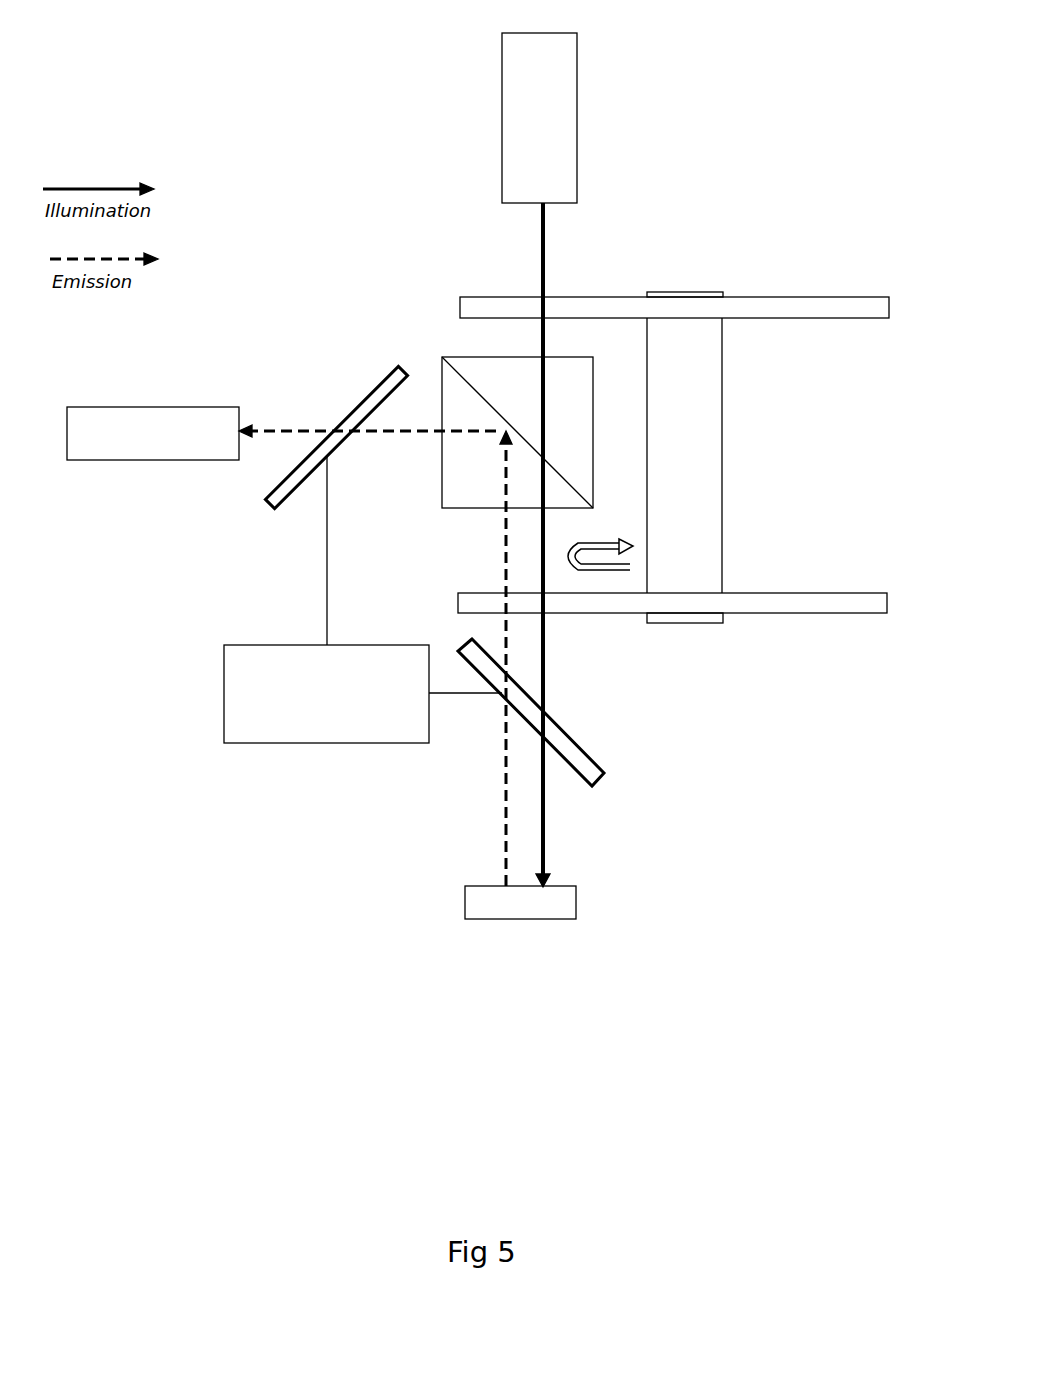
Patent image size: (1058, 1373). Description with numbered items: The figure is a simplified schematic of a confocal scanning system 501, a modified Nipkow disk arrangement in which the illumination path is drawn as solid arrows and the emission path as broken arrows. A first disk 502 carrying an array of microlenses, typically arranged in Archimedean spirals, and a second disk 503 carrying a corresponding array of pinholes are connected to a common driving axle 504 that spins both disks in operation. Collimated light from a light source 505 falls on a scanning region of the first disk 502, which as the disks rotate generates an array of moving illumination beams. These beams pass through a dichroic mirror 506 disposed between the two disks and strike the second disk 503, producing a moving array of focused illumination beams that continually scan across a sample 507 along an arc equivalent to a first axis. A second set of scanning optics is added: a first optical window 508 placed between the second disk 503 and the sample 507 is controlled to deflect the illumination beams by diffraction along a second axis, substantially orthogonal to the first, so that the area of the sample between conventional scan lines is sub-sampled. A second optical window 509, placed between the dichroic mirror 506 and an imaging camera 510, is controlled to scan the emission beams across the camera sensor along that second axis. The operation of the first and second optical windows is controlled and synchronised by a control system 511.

The confocal scanning system 501 is at (275, 60).
The first disk 502 is at (709, 262).
The second disk 503 is at (704, 640).
The common driving axle 504 is at (744, 455).
The light source 505 is at (612, 118).
The dichroic mirror 506 is at (466, 459).
The sample 507 is at (483, 901).
The first optical window 508 is at (602, 718).
The second optical window 509 is at (327, 372).
The imaging camera 510 is at (153, 500).
The control system 511 is at (354, 648).